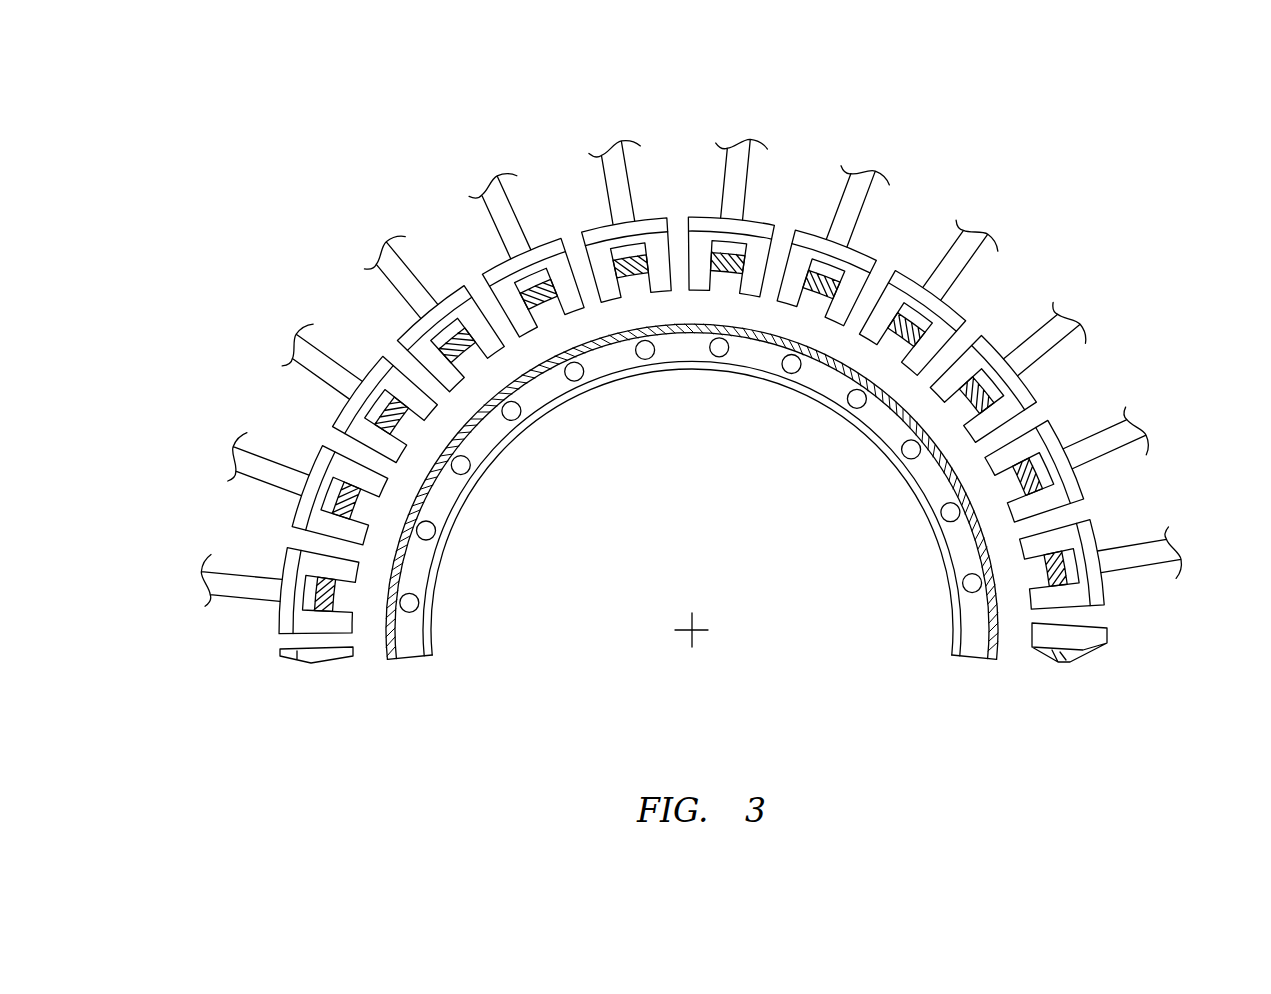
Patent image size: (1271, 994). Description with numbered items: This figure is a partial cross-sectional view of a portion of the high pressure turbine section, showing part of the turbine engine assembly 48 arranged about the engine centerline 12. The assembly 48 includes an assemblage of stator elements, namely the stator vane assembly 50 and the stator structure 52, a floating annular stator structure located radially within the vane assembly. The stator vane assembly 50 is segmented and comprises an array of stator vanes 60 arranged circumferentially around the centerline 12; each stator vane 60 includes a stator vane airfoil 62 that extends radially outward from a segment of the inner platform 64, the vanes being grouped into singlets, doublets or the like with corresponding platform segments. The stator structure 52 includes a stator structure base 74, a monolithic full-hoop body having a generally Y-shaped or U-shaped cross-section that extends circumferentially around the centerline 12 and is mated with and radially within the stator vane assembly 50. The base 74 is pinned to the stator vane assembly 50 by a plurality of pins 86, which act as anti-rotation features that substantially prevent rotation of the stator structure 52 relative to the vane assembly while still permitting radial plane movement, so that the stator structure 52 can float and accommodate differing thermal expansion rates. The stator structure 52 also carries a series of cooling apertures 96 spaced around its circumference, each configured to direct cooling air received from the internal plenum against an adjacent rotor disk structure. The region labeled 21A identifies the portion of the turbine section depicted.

The centerline 12 is at (692, 631).
The turbine stage 21A is at (699, 406).
The assembly 48 is at (699, 435).
The stator vane assembly 50 is at (699, 388).
The stator structure 52 is at (692, 491).
The stator vane 60 is at (692, 431).
The stator vane airfoil 62 is at (937, 258).
The inner platform 64 is at (900, 273).
The stator structure base 74 is at (348, 694).
The pins 86 is at (898, 314).
The cooling apertures 96 is at (418, 600).